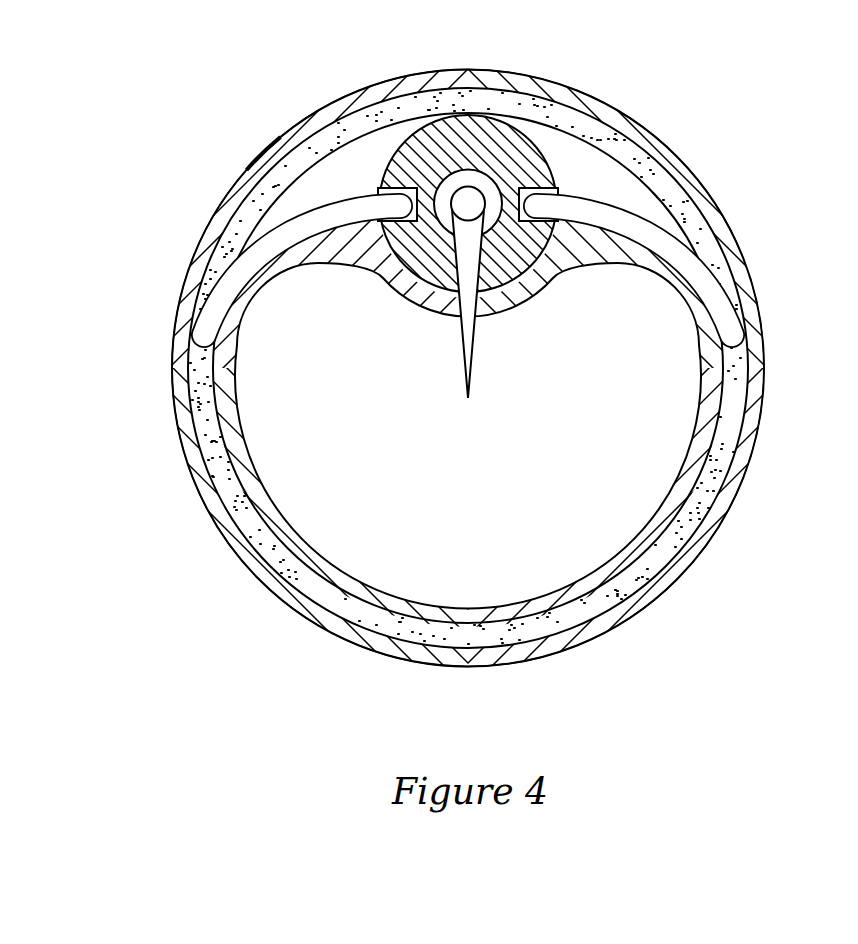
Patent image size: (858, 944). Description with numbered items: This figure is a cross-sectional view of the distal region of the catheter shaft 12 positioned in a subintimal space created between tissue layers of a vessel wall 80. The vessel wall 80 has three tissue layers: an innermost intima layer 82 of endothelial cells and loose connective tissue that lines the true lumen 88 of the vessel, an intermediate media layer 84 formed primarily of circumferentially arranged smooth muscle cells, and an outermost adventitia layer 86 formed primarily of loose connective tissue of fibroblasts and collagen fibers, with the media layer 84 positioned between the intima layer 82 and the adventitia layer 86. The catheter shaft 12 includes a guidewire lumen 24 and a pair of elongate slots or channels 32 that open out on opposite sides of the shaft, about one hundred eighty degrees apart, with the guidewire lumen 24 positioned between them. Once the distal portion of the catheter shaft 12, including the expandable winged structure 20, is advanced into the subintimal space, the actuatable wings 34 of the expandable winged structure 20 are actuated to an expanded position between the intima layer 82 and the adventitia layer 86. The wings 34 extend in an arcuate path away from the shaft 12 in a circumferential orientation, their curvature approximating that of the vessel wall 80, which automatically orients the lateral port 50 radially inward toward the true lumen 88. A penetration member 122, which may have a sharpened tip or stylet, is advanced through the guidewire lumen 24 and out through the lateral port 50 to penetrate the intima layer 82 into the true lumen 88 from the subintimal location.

The catheter shaft 12 is at (528, 135).
The expandable winged structure 20 is at (322, 175).
The guidewire lumen 24 is at (462, 180).
The elongate slot or channel 32 is at (380, 188).
The actuatable wings 34 is at (230, 280).
The lateral port 50 is at (457, 300).
The vessel wall 80 is at (171, 433).
The intima layer 82 is at (260, 493).
The media layer 84 is at (675, 538).
The adventitia layer 86 is at (766, 353).
The true lumen 88 is at (458, 511).
The penetration member 122 is at (474, 347).